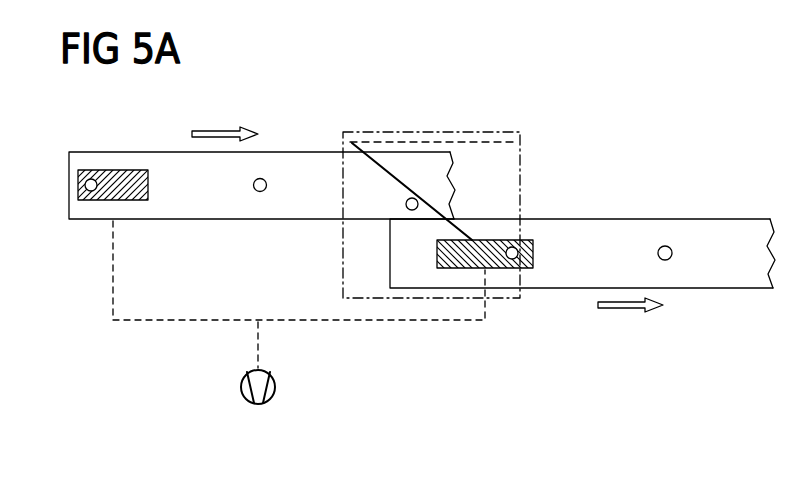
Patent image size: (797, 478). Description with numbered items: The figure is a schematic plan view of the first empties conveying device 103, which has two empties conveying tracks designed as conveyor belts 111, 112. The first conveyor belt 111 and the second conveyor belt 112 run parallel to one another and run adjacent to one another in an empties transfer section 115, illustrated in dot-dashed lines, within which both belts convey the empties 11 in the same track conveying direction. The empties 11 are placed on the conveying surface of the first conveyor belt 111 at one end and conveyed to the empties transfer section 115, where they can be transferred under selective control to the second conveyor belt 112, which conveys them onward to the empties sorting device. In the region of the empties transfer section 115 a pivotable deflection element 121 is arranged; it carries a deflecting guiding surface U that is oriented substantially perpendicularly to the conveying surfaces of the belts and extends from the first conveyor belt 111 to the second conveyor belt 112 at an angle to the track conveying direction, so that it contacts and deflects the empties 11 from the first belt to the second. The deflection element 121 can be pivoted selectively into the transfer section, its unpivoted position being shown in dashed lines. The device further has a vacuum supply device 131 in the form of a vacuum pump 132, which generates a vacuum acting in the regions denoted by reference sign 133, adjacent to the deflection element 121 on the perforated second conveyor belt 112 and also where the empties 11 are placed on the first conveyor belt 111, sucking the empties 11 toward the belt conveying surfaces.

The first empties conveying device 103 is at (500, 166).
The empties transfer section 115 is at (525, 178).
The pivotable deflection element 121 is at (392, 146).
The empties 11 is at (253, 185).
The vacuum region 133 is at (97, 200).
The first conveyor belt 111 is at (275, 220).
The second conveyor belt 112 is at (578, 290).
The vacuum supply device 131 is at (299, 332).
The vacuum pump 132 is at (278, 386).
The deflecting guiding surface U is at (388, 176).